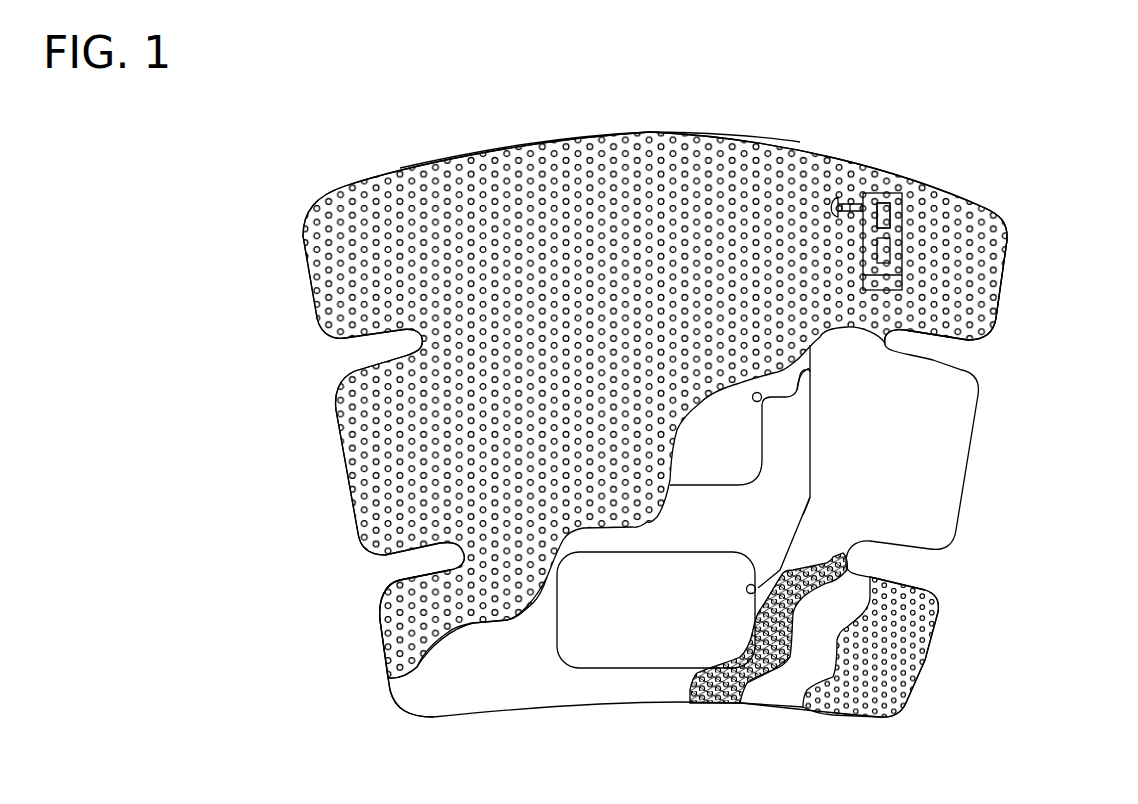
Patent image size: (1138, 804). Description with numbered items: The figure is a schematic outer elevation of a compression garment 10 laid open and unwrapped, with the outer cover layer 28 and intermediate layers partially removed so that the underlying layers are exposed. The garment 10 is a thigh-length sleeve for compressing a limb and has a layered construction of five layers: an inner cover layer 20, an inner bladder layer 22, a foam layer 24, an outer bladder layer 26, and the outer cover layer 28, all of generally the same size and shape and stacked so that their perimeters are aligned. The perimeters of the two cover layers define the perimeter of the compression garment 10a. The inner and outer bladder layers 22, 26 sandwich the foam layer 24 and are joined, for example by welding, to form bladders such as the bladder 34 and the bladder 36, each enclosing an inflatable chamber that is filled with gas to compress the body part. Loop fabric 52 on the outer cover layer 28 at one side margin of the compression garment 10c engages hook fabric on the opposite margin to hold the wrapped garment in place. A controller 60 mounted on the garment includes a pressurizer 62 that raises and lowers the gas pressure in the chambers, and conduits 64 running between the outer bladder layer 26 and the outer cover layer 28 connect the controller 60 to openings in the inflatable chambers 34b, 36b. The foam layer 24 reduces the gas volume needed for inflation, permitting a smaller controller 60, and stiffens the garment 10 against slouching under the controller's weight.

The compression garment 10 is at (1022, 109).
The perimeter of the compression garment 10a is at (490, 150).
The side margin of the compression garment 10c is at (977, 246).
The loop fabric 52 is at (970, 293).
The controller 60 is at (896, 193).
The pressurizer 62 is at (890, 217).
The conduits 64 is at (845, 197).
The bladder 34 is at (720, 453).
The opening in the inflatable chamber 34b is at (763, 418).
The bladder 36 is at (613, 608).
The opening in the inflatable chamber 36b is at (745, 590).
The outer cover layer 28 is at (400, 635).
The outer bladder layer 26 is at (513, 680).
The foam layer 24 is at (717, 703).
The inner bladder layer 22 is at (773, 690).
The inner cover layer 20 is at (920, 640).